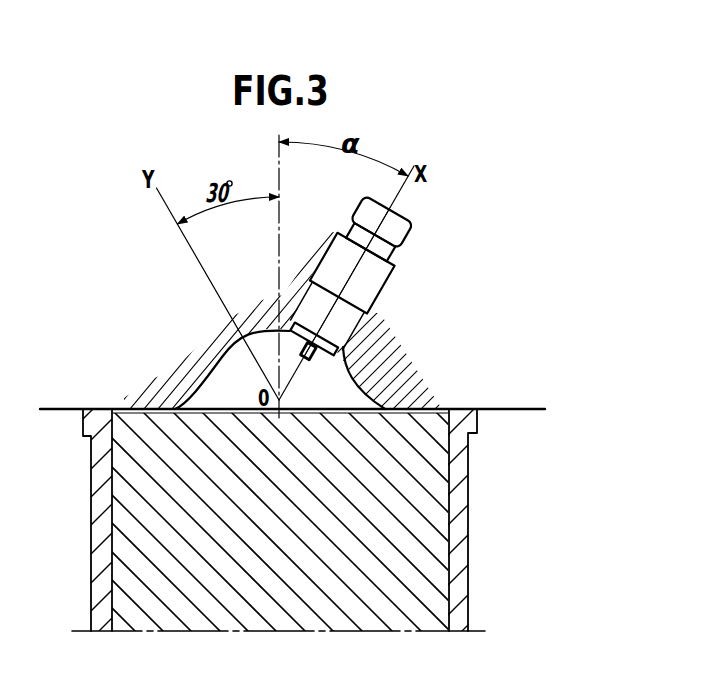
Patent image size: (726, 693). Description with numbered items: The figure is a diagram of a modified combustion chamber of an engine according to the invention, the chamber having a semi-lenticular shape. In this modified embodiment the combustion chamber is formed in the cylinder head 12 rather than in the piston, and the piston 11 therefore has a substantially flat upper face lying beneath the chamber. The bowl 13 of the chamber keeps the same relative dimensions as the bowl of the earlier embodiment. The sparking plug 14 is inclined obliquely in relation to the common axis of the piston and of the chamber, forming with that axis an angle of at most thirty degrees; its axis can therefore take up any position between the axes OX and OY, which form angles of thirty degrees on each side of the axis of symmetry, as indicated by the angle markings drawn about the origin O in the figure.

The piston 11 is at (412, 530).
The cylinder head 12 is at (150, 352).
The bowl 13 is at (330, 388).
The sparking plug 14 is at (377, 277).